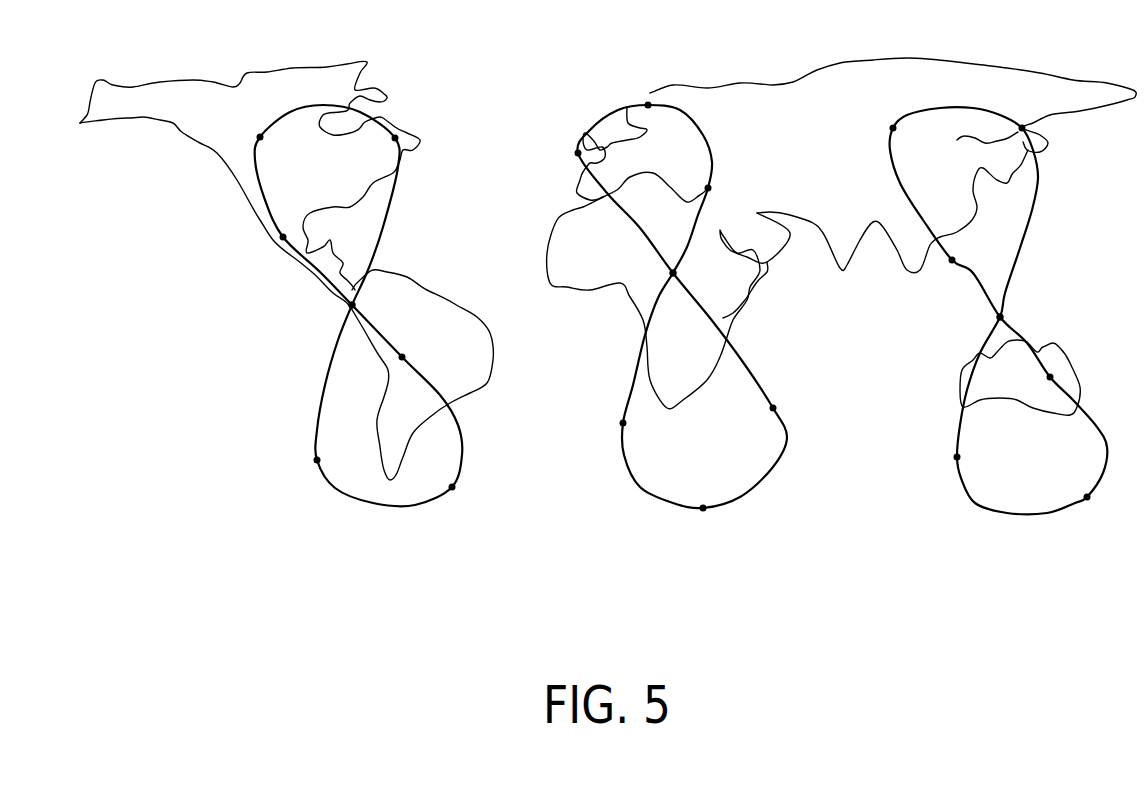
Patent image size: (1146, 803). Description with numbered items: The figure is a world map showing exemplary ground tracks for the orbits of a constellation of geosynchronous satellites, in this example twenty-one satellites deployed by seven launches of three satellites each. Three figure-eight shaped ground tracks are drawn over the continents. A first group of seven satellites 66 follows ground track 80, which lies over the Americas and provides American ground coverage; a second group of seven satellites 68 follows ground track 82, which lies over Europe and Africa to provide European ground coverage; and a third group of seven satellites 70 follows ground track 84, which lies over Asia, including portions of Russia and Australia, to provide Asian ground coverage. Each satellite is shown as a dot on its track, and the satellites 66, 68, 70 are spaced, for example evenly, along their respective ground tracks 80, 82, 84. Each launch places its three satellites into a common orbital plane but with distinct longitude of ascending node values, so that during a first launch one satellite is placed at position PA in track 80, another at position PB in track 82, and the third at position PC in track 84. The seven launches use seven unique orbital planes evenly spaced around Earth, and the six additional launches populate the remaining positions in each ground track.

The first group of satellites 66 is at (260, 137).
The second group of satellites 68 is at (648, 105).
The third group of satellites 70 is at (893, 128).
The ground track 80 is at (463, 440).
The ground track 82 is at (747, 497).
The ground track 84 is at (973, 503).
The position in track 80 PA is at (324, 327).
The position in track 82 PB is at (802, 423).
The position in track 84 PC is at (953, 281).